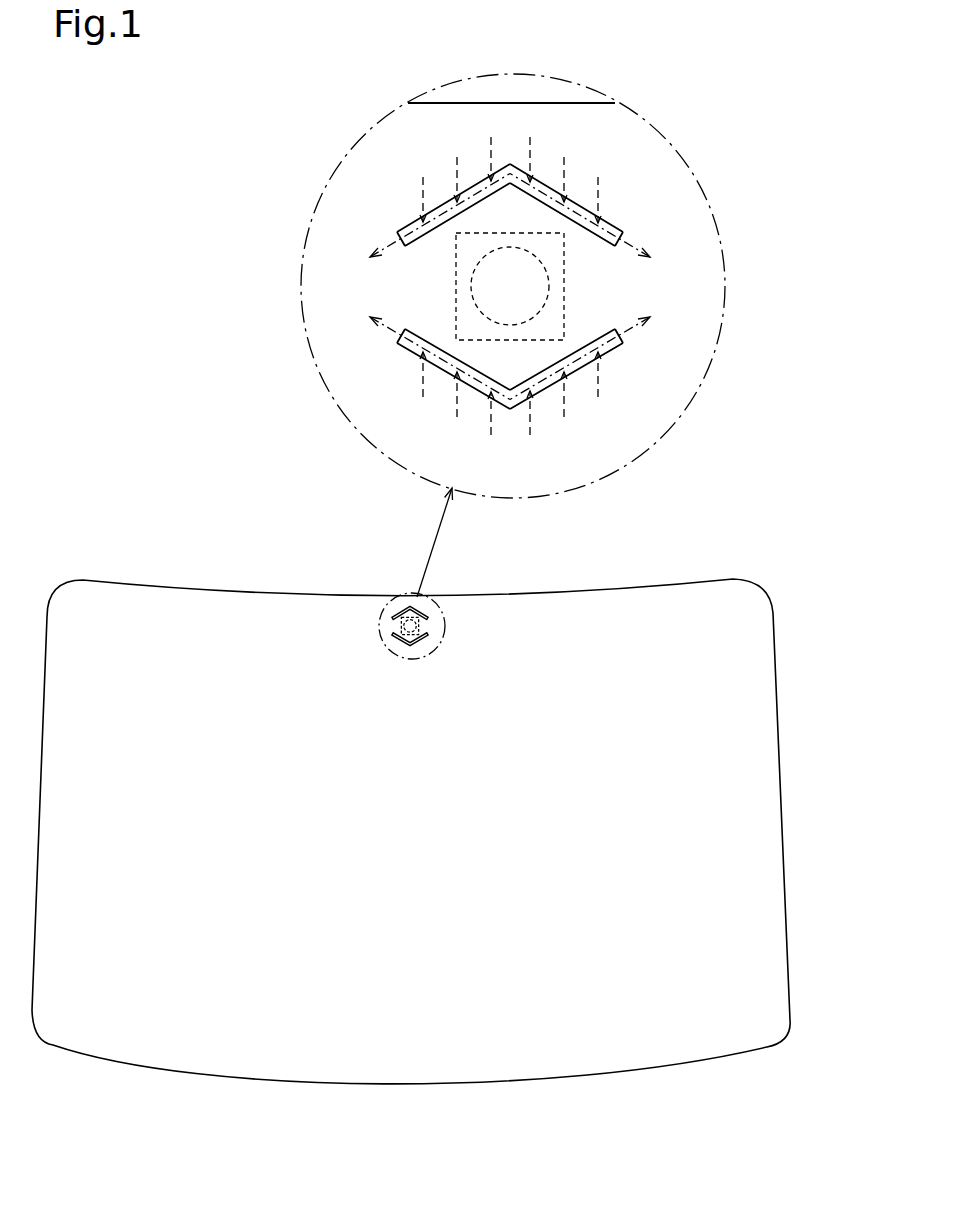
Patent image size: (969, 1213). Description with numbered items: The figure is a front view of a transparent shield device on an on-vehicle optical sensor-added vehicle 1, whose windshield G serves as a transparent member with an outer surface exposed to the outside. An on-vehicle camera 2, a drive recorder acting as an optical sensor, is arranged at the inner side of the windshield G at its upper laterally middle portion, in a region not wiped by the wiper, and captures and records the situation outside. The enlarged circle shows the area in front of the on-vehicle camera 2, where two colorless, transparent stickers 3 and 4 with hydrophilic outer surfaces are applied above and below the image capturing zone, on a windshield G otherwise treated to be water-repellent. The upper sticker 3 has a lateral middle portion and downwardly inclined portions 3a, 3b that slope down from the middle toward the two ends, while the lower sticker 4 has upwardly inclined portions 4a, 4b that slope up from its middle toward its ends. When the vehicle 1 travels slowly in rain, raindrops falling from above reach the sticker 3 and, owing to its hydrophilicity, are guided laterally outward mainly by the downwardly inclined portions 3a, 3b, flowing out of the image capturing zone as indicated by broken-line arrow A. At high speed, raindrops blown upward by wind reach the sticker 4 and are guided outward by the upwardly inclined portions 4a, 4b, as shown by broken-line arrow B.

The on-vehicle optical sensor-added vehicle 1 is at (411, 794).
The windshield G is at (212, 605).
The on-vehicle camera 2 is at (456, 283).
The sticker 3 is at (510, 383).
The downwardly inclined portion 3a is at (582, 220).
The downwardly inclined portion 3b is at (440, 222).
The sticker 4 is at (510, 479).
The upwardly inclined portion 4a is at (580, 350).
The upwardly inclined portion 4b is at (440, 350).
The arrow A is at (383, 247).
The arrow B is at (383, 330).